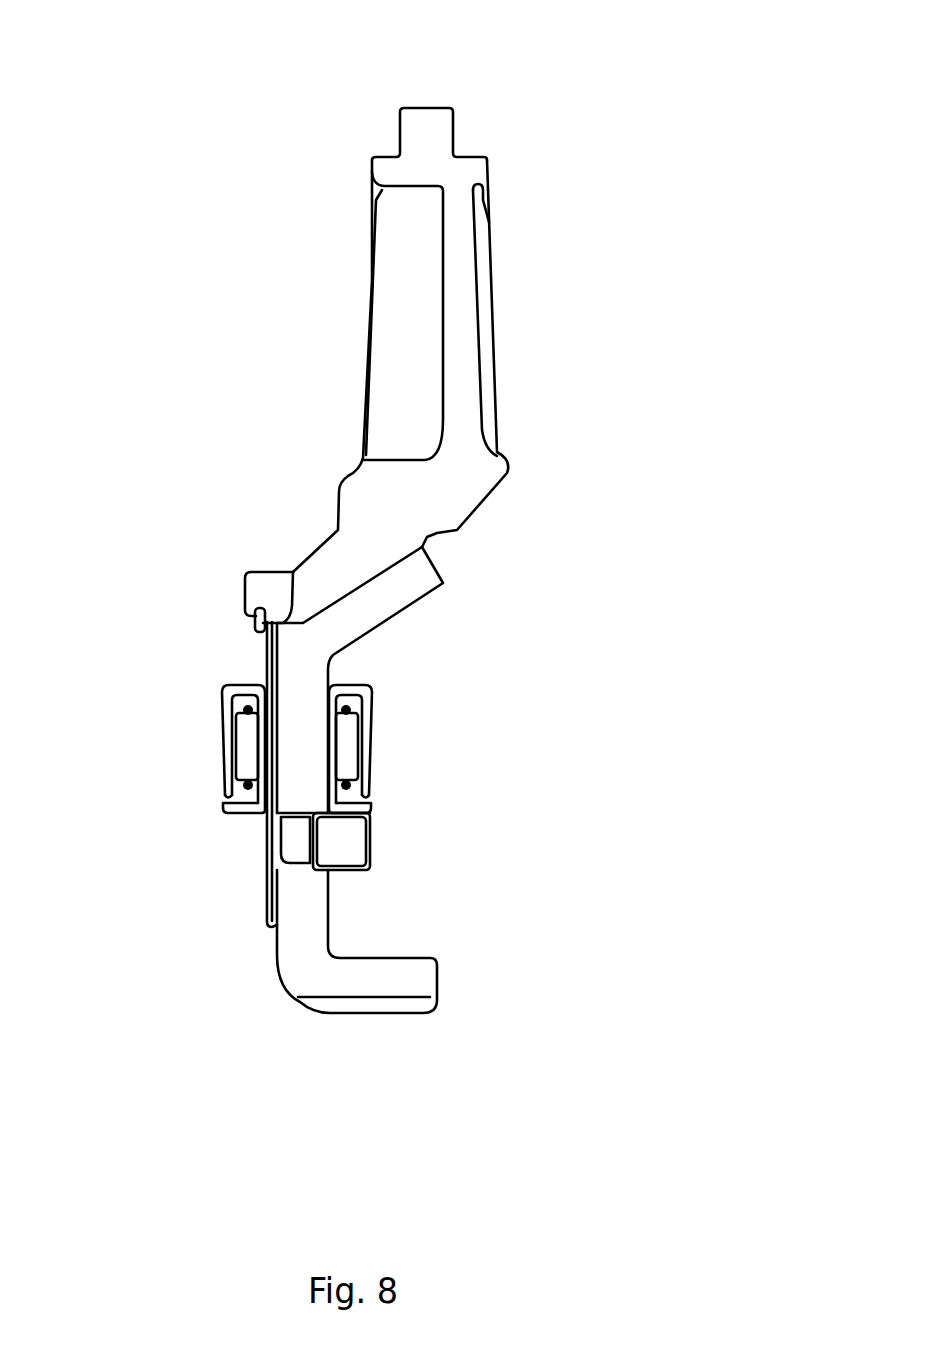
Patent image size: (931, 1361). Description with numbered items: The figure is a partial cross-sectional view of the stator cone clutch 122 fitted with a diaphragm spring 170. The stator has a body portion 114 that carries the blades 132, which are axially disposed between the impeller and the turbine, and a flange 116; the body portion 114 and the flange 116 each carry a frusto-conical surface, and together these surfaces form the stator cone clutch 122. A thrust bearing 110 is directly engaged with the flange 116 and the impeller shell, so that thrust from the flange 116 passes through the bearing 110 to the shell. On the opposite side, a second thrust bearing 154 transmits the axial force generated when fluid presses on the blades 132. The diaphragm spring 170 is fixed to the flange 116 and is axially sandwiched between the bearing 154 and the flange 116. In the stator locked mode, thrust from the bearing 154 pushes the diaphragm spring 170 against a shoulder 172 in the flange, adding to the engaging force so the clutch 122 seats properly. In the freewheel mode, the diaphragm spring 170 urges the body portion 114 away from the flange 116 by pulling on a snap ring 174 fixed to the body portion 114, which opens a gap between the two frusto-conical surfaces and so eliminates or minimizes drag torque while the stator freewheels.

The stator cone clutch 122 is at (616, 65).
The body portion 114 is at (416, 107).
The blades 132 is at (457, 312).
The flange 116 is at (425, 602).
The shoulder 172 is at (293, 572).
The snap ring 174 is at (255, 625).
The diaphragm spring 170 is at (265, 652).
The thrust bearing 154 is at (220, 745).
The thrust bearing 110 is at (377, 747).